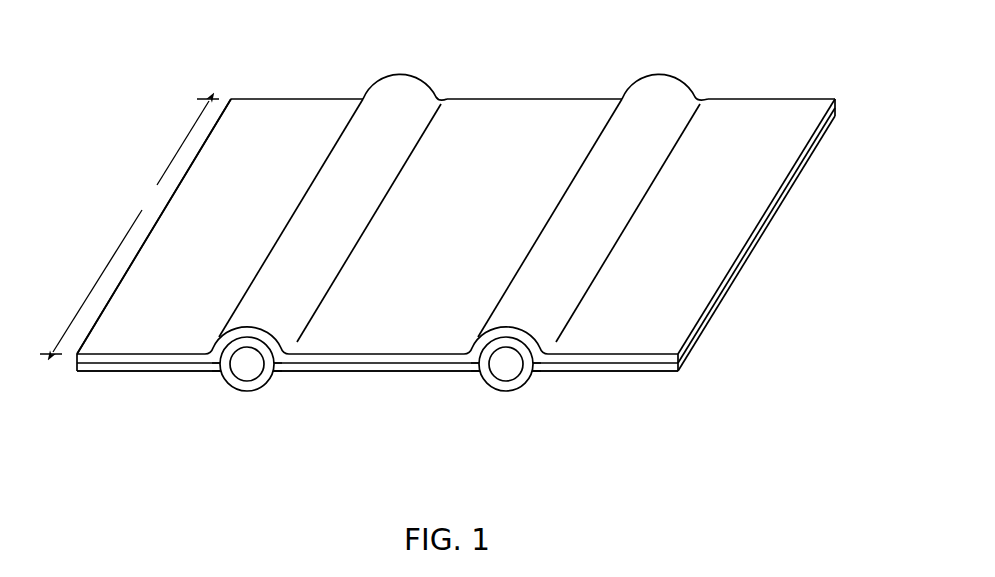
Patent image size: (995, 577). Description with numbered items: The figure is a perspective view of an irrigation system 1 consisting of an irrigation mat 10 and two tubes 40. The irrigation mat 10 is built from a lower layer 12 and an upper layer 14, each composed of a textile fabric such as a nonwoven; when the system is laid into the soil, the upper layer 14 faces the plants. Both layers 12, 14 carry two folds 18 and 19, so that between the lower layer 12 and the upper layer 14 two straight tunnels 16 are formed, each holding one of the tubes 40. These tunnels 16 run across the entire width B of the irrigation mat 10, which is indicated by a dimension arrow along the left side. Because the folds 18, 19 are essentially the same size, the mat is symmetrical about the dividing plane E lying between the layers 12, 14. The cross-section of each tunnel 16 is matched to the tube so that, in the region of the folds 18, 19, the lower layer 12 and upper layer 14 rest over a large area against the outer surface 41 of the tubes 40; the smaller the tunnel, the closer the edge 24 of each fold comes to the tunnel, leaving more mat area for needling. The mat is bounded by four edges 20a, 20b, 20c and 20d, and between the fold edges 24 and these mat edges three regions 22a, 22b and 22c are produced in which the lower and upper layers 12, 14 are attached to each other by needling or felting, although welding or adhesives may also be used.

The irrigation system 1 is at (199, 40).
The irrigation mat 10 is at (580, 78).
The lower layer 12 is at (668, 376).
The upper layer 14 is at (706, 334).
The tunnels 16 is at (281, 373).
The fold 18 is at (256, 391).
The fold 19 is at (421, 74).
The edge 20a is at (127, 268).
The edge 20b is at (267, 99).
The edge 20c is at (754, 248).
The edge 20d is at (152, 365).
The region 22a is at (203, 230).
The region 22b is at (436, 230).
The region 22c is at (672, 230).
The edge of the folds 24 is at (350, 118).
The tube 40 is at (242, 382).
The outer surface of the tubes 41 is at (213, 374).
The width of the irrigation mat B is at (129, 226).
The dividing plane E is at (93, 365).